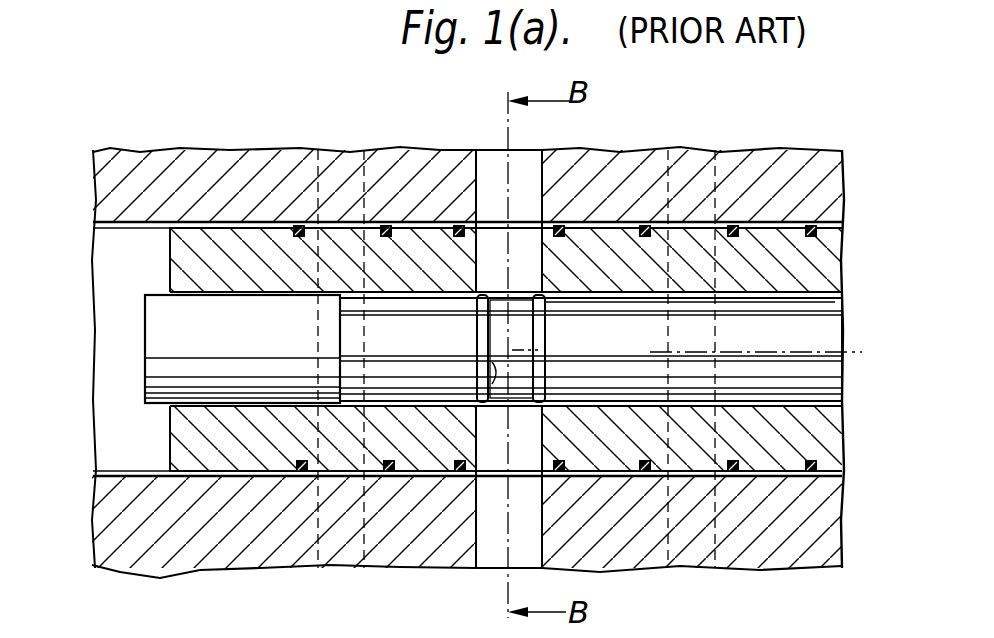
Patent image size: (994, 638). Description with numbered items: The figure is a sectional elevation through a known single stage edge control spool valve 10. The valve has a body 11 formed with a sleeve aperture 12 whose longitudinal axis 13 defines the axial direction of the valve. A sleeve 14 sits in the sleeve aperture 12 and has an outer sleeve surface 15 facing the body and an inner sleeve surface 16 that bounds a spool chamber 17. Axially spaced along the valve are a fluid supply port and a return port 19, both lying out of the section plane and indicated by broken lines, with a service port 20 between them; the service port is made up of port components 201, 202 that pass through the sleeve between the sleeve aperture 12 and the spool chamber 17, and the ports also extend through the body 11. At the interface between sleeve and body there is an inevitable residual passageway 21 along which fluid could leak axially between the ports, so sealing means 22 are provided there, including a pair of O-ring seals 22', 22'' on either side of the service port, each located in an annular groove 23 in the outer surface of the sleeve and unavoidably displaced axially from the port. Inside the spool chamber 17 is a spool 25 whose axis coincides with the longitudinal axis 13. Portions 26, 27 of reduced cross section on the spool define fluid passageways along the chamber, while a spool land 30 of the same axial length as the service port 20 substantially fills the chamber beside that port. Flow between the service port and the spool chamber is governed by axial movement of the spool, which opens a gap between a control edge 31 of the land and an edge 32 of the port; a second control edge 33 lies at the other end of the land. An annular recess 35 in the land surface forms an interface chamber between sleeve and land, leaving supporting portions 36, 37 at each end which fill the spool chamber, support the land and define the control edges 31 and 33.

The edge control spool valve 10 is at (262, 115).
The body 11 is at (818, 182).
The sleeve aperture 12 is at (707, 150).
The longitudinal axis 13 is at (845, 353).
The sleeve 14 is at (838, 260).
The outer sleeve surface 15 is at (190, 226).
The inner sleeve surface 16 is at (178, 300).
The spool chamber 17 is at (835, 298).
The return port 19 is at (318, 150).
The service port 20 is at (491, 138).
The residual passageway 21 is at (562, 203).
The sealing means 22 is at (440, 147).
The O-ring seal 22' is at (508, 355).
The O-ring seal 22'' is at (626, 340).
The annular grooves 23 is at (458, 242).
The spool 25 is at (157, 372).
The portion of reduced cross section 26 is at (363, 410).
The portion of reduced cross section 27 is at (770, 400).
The spool land 30 is at (548, 350).
The control edge 31 is at (480, 311).
The edge of the port 32 is at (333, 308).
The control edge 33 is at (548, 299).
The annular recess 35 is at (480, 317).
The supporting portion 36 is at (480, 313).
The supporting portion 37 is at (542, 320).
The port component 201 is at (525, 258).
The port component 202 is at (530, 435).